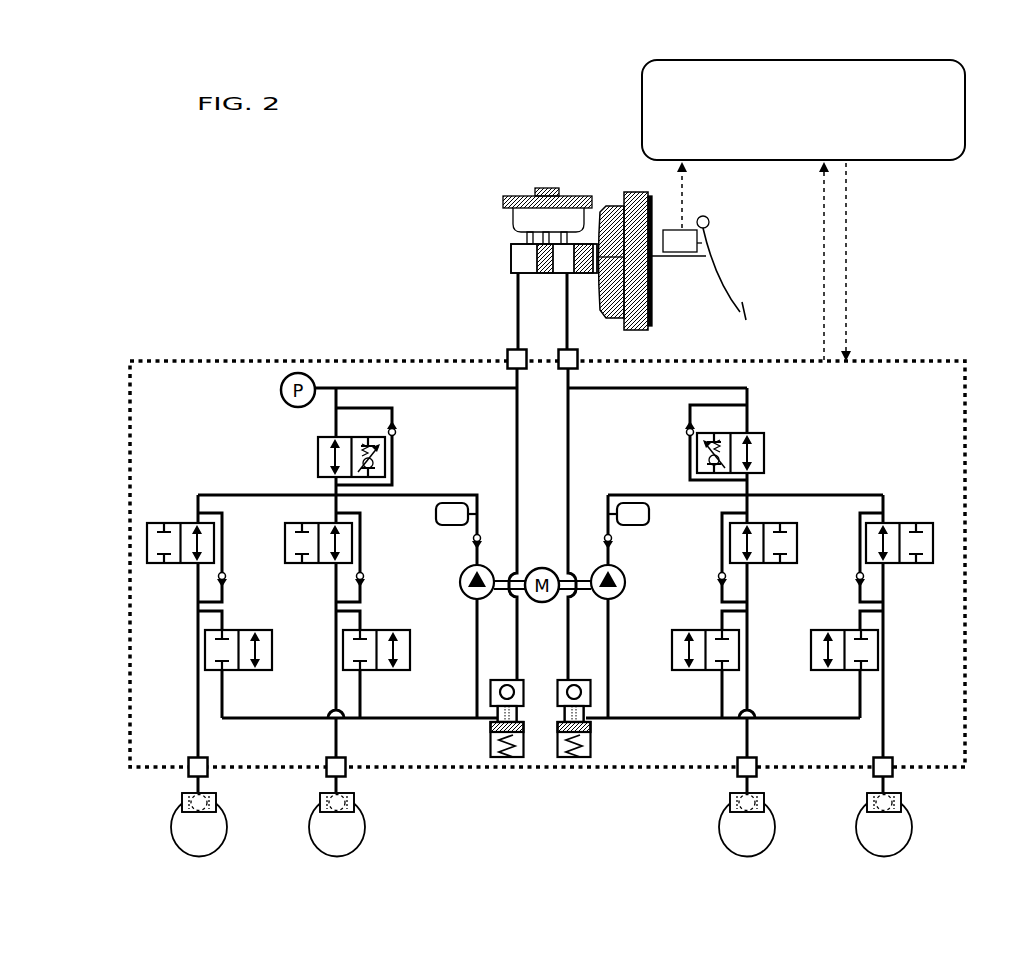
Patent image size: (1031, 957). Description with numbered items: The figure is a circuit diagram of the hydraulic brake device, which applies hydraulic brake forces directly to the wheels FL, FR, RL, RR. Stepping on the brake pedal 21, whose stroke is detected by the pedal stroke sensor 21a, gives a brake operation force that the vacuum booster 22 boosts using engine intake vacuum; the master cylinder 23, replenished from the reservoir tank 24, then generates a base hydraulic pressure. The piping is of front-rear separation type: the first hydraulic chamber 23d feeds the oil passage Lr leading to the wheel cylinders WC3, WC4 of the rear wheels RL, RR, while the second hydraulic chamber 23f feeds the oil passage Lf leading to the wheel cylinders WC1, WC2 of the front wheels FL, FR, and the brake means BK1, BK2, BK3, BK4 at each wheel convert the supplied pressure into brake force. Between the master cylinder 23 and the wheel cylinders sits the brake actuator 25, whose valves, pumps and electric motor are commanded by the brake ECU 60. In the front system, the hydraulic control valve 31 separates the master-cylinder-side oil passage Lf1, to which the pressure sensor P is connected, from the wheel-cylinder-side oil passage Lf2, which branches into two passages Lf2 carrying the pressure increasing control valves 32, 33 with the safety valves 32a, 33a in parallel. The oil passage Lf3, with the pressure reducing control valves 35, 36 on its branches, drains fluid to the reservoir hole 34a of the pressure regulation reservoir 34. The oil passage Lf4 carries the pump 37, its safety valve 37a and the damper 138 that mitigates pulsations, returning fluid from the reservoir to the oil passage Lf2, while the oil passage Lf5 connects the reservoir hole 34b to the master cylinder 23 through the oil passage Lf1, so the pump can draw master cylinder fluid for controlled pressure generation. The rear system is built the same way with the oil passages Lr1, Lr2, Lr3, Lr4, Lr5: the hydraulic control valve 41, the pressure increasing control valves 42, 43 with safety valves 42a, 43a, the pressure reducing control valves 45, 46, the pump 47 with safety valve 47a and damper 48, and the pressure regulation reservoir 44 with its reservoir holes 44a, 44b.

The brake ECU 60 is at (966, 108).
The brake actuator 25 is at (906, 358).
The reservoir tank 24 is at (547, 188).
The master cylinder 23 is at (538, 267).
The second hydraulic chamber 23f is at (508, 265).
The first hydraulic chamber 23d is at (549, 275).
The vacuum booster 22 is at (623, 190).
The brake pedal 21 is at (712, 275).
The pedal stroke sensor 21a is at (690, 232).
The hydraulic control valve 31 is at (317, 461).
The hydraulic control valve 41 is at (766, 461).
The pressure increasing control valve 32 is at (178, 521).
The pressure increasing control valve 33 is at (286, 540).
The safety valve 32a is at (228, 575).
The safety valve 33a is at (366, 575).
The pressure reducing control valve 35 is at (243, 628).
The pressure reducing control valve 36 is at (385, 628).
The pump 37 is at (460, 588).
The safety valve 37a is at (470, 541).
The damper 138 is at (434, 513).
The pressure regulation reservoir 34 is at (482, 725).
The reservoir hole 34a is at (490, 712).
The reservoir hole 34b is at (504, 680).
The pressure increasing control valve 42 is at (798, 540).
The pressure increasing control valve 43 is at (893, 520).
The safety valve 42a is at (716, 575).
The safety valve 43a is at (854, 575).
The pressure reducing control valve 45 is at (696, 628).
The pressure reducing control valve 46 is at (835, 628).
The pump 47 is at (627, 582).
The safety valve 47a is at (616, 541).
The damper 48 is at (651, 513).
The pressure regulation reservoir 44 is at (593, 725).
The reservoir hole 44a is at (592, 712).
The reservoir hole 44b is at (578, 680).
The oil passage Lf is at (371, 384).
The oil passage Lf1 is at (410, 389).
The oil passage Lf2 is at (196, 586).
The oil passage Lf3 is at (380, 720).
The oil passage Lf4 is at (412, 494).
The oil passage Lf5 is at (515, 441).
The oil passage Lr is at (752, 401).
The oil passage Lr1 is at (640, 389).
The oil passage Lr2 is at (749, 592).
The oil passage Lr3 is at (645, 720).
The oil passage Lr4 is at (655, 494).
The oil passage Lr5 is at (570, 441).
The wheel cylinder WC1 is at (182, 800).
The wheel cylinder WC2 is at (320, 800).
The wheel cylinder WC3 is at (730, 800).
The wheel cylinder WC4 is at (867, 800).
The brake means BK1 is at (217, 799).
The brake means BK2 is at (354, 802).
The brake means BK3 is at (765, 799).
The brake means BK4 is at (901, 802).
The front left wheel FL is at (227, 820).
The front right wheel FR is at (365, 822).
The rear left wheel RL is at (775, 820).
The rear right wheel RR is at (912, 822).